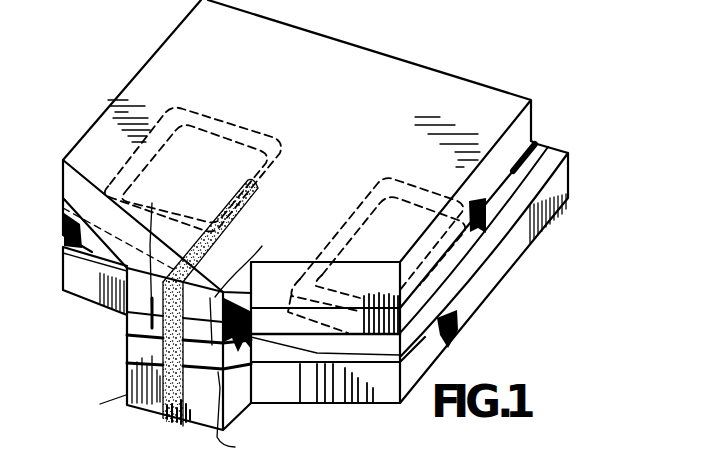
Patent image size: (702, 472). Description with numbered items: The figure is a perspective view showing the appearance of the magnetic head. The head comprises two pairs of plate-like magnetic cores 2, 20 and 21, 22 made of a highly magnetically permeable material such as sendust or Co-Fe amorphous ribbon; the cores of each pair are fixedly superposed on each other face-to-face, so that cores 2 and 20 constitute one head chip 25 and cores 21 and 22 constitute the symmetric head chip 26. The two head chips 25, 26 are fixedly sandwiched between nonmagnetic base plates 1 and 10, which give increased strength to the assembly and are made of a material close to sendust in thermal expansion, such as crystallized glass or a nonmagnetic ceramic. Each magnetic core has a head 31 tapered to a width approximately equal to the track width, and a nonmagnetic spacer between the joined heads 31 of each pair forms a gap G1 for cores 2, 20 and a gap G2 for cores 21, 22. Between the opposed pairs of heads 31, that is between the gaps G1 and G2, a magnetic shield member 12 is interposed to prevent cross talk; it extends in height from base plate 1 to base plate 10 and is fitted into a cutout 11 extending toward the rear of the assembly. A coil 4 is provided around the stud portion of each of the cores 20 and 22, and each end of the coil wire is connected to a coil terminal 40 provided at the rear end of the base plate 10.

The base plate 1 is at (501, 104).
The base plate 10 is at (566, 173).
The magnetic core 2 is at (285, 315).
The magnetic core 20 is at (267, 352).
The head chip 25 is at (342, 437).
The head chip 26 is at (80, 332).
The magnetic core 21 is at (125, 326).
The magnetic core 22 is at (127, 350).
The head 31 is at (180, 323).
The coil 4 is at (175, 235).
The cutout 11 is at (220, 208).
The magnetic shield member 12 is at (260, 186).
The coil terminal 40 is at (403, 461).
The gap G1 is at (174, 400).
The gap G2 is at (152, 332).